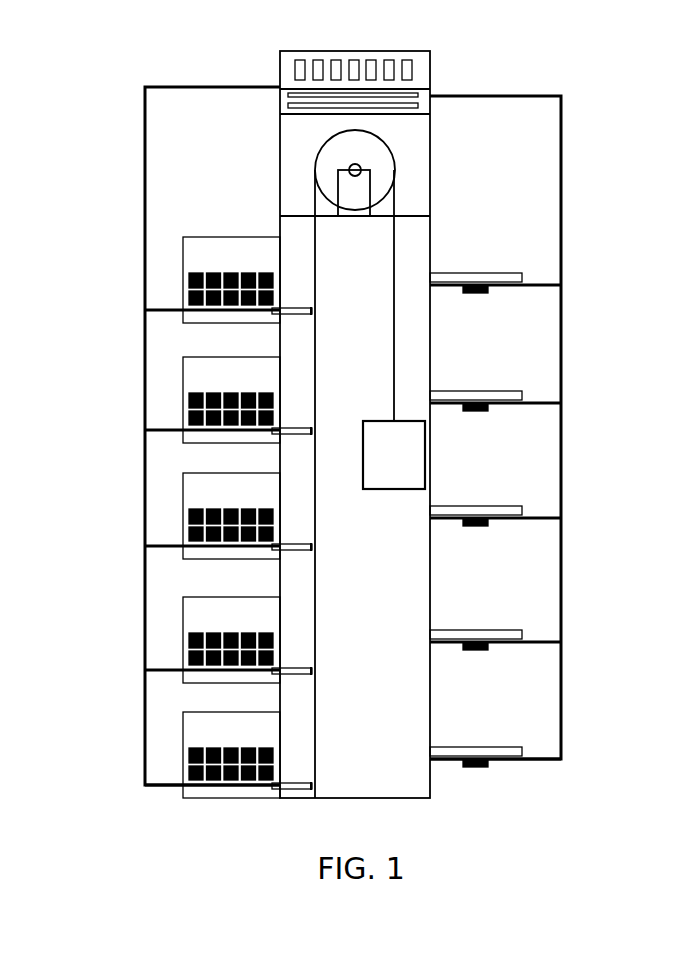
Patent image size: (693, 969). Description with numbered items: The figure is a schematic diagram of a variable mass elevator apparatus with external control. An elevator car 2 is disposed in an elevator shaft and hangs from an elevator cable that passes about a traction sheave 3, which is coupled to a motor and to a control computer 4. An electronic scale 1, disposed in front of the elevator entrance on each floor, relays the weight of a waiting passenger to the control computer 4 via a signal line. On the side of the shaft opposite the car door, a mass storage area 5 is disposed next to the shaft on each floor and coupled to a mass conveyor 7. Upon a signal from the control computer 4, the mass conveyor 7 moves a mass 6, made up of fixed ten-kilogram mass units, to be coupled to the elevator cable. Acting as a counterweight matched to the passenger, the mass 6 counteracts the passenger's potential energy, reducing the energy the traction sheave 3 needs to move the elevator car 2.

The electronic scale 1 is at (552, 777).
The elevator car 2 is at (519, 433).
The traction sheave 3 is at (495, 173).
The control computer 4 is at (477, 74).
The mass storage area 5 is at (157, 180).
The mass 6 is at (154, 270).
The mass conveyor 7 is at (173, 362).